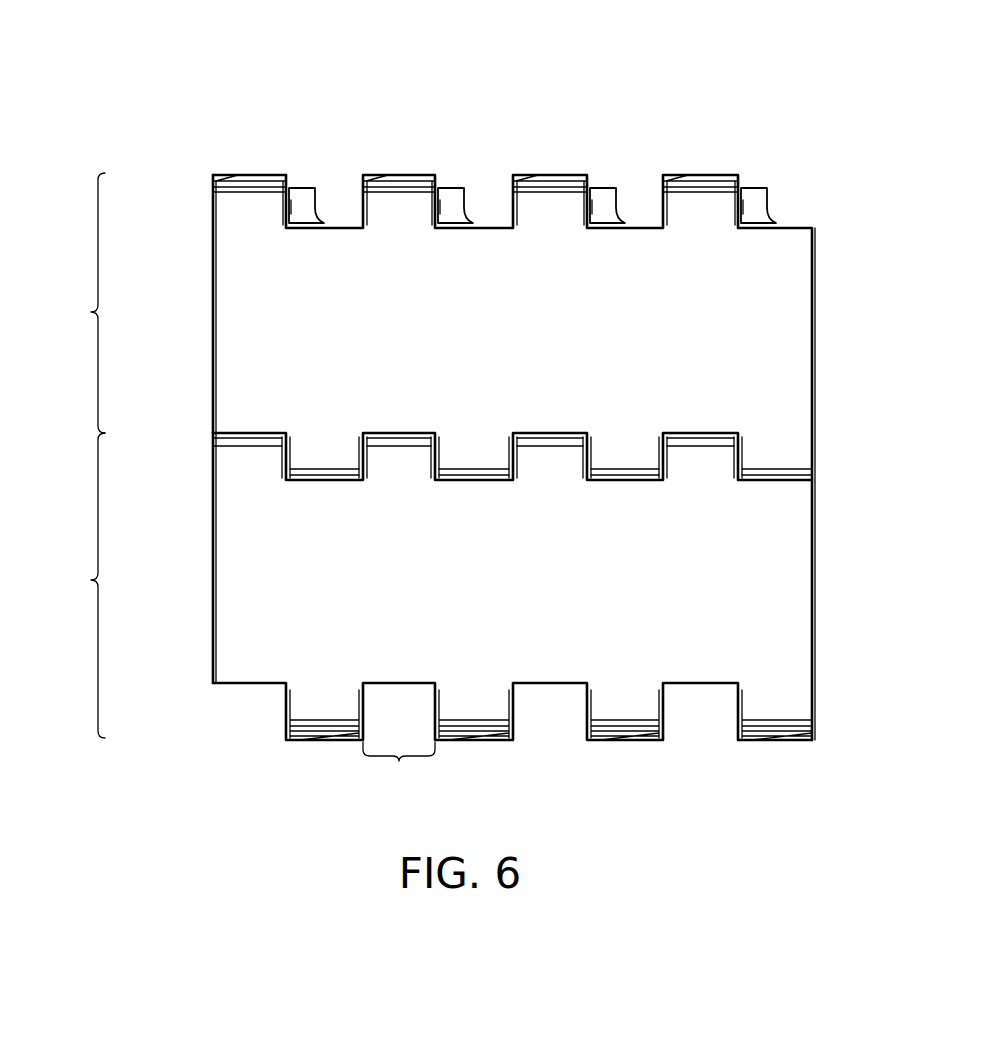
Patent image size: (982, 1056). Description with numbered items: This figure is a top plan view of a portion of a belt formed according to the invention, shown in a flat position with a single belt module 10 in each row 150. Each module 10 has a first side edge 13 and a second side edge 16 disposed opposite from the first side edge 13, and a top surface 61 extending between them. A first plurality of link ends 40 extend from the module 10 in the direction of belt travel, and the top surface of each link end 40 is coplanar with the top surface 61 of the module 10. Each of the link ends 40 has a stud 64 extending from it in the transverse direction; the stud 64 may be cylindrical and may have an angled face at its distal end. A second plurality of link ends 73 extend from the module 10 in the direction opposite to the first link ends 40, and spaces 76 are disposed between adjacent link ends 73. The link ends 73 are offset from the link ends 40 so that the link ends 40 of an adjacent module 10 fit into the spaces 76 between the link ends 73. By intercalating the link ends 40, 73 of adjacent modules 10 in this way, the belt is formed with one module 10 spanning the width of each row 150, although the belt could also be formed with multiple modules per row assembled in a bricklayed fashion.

The belt module 10 is at (806, 153).
The first side edge 13 is at (212, 303).
The second side edge 16 is at (814, 337).
The first plurality of link ends 40 is at (260, 168).
The top surface 61 is at (504, 334).
The stud 64 is at (303, 205).
The second plurality of link ends 73 is at (325, 448).
The spaces 76 is at (399, 764).
The row 150 is at (74, 455).